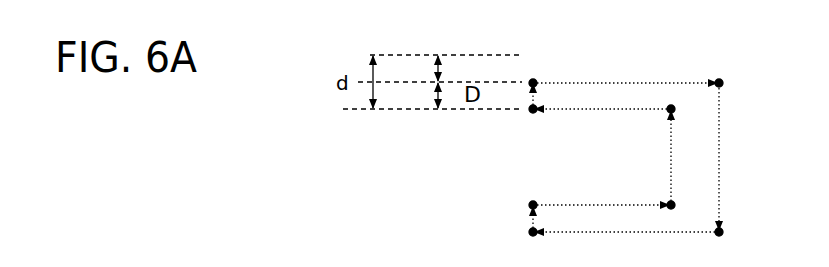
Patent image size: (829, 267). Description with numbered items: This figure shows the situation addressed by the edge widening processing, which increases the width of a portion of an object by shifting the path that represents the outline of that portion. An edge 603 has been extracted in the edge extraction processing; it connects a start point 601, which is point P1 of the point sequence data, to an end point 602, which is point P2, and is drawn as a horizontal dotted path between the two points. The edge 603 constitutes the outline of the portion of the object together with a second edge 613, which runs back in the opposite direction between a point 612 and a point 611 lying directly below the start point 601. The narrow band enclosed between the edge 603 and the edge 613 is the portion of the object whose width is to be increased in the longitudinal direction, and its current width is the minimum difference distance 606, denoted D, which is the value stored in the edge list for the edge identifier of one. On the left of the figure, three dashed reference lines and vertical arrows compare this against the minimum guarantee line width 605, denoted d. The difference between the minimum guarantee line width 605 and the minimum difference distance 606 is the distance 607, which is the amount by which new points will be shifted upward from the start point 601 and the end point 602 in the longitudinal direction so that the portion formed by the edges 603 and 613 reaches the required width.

The start point 601 is at (553, 65).
The end point 602 is at (740, 65).
The edge 603 is at (657, 65).
The minimum guarantee line width 605 is at (368, 78).
The minimum difference distance 606 is at (435, 97).
The distance 607 is at (435, 72).
The point 611 is at (537, 114).
The point 612 is at (676, 114).
The edge 613 is at (647, 111).